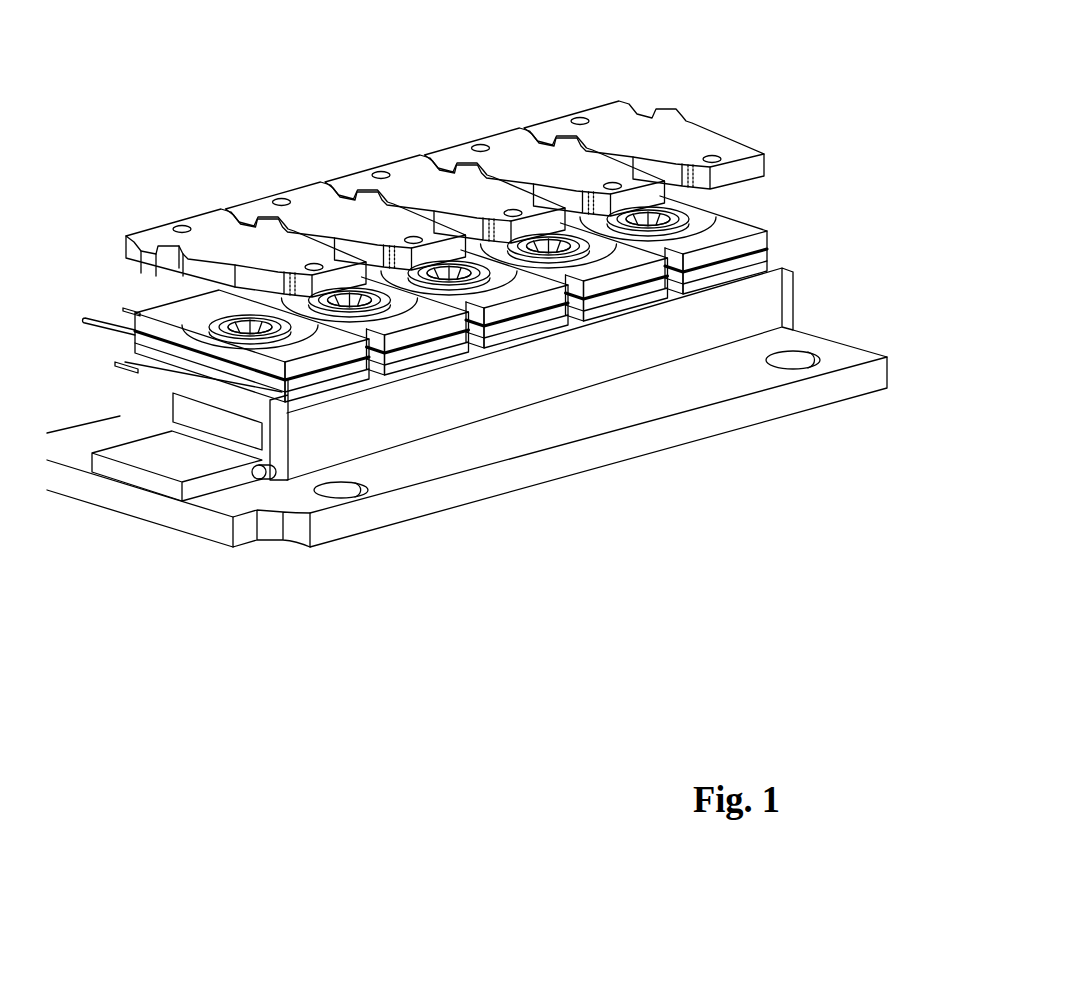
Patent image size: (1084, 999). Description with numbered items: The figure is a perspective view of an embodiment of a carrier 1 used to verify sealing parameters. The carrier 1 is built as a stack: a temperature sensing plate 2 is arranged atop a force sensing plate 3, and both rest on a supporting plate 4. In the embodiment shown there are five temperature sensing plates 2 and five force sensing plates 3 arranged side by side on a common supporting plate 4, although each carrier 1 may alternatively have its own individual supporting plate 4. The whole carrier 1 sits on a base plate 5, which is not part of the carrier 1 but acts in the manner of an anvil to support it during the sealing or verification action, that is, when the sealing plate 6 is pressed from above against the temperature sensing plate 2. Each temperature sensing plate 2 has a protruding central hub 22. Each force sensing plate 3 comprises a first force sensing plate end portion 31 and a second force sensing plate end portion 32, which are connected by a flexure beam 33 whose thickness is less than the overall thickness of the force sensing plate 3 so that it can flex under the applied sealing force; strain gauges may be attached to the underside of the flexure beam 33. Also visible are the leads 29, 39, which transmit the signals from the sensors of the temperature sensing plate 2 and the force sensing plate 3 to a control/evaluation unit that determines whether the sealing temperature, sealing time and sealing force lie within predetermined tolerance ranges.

The carrier 1 is at (431, 415).
The temperature sensing plate 2 is at (346, 360).
The force sensing plate 3 is at (337, 384).
The supporting plate 4 is at (333, 439).
The base plate 5 is at (163, 511).
The sealing plate 6 is at (655, 146).
The central hub 22 is at (212, 418).
The lead 29 is at (130, 310).
The first force sensing plate end portion 31 is at (277, 400).
The second force sensing plate end portion 32 is at (137, 380).
The flexure beam 33 is at (214, 425).
The lead 39 is at (85, 318).